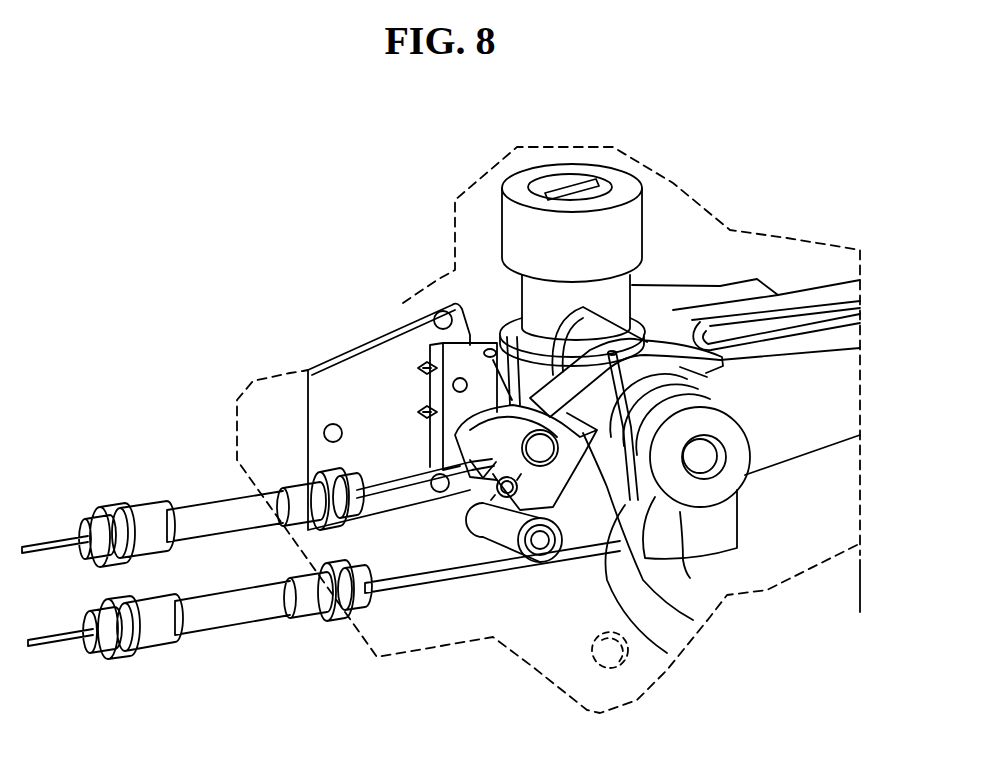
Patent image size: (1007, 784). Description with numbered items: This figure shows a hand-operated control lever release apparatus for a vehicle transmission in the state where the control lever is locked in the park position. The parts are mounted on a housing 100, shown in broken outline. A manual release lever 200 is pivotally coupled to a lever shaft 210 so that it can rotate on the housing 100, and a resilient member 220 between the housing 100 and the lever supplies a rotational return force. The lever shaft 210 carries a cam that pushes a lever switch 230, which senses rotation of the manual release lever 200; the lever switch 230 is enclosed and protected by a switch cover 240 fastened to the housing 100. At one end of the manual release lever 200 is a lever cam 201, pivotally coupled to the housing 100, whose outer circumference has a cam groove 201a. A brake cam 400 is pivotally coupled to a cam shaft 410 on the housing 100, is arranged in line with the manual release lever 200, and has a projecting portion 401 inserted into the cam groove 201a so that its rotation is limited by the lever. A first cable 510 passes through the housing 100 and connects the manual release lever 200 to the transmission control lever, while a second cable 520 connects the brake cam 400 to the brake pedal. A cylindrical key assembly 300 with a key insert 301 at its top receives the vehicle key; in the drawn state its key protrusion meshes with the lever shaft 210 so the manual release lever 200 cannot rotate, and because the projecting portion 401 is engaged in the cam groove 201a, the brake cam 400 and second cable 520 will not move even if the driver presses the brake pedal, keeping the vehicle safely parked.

The housing 100 is at (727, 218).
The manual release lever 200 is at (823, 284).
The lever cam 201 is at (737, 548).
The cam groove 201a is at (693, 620).
The lever shaft 210 is at (712, 460).
The resilient member 220 is at (690, 578).
The lever switch 230 is at (437, 390).
The switch cover 240 is at (400, 307).
The key assembly 300 is at (650, 198).
The key insert 301 is at (570, 187).
The brake cam 400 is at (485, 515).
The projecting portion 401 is at (667, 653).
The cam shaft 410 is at (542, 547).
The first cable 510 is at (206, 640).
The second cable 520 is at (182, 502).